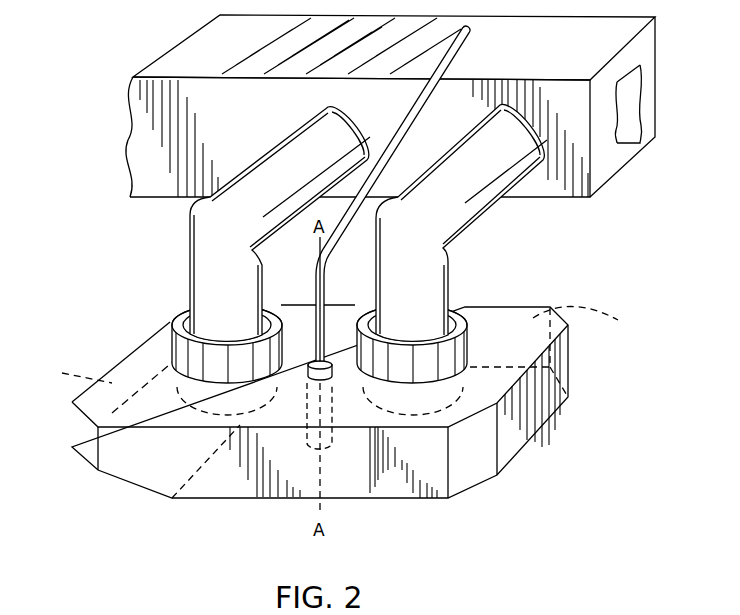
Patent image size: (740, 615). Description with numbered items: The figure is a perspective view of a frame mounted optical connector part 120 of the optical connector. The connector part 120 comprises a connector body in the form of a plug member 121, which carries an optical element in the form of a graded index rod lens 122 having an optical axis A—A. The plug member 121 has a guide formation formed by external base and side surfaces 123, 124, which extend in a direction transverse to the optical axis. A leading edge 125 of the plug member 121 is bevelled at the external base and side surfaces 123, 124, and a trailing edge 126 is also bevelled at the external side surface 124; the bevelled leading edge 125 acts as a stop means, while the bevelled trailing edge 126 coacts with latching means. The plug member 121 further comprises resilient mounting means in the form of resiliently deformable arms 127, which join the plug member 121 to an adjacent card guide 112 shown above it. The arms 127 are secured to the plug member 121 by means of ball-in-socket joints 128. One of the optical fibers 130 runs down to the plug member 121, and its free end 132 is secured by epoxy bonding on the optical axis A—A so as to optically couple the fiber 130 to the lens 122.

The card guide 112 is at (543, 194).
The frame mounted optical connector part 120 is at (563, 287).
The plug member 121 is at (360, 485).
The graded index rod lens 122 is at (306, 450).
The external base surface 123 is at (570, 397).
The external side surface 124 is at (197, 485).
The leading edge 125 is at (66, 374).
The trailing edge 126 is at (513, 448).
The resiliently deformable arms 127 is at (200, 229).
The ball-in-socket joints 128 is at (173, 342).
The optical fiber 130 is at (317, 265).
The free end 132 is at (330, 380).